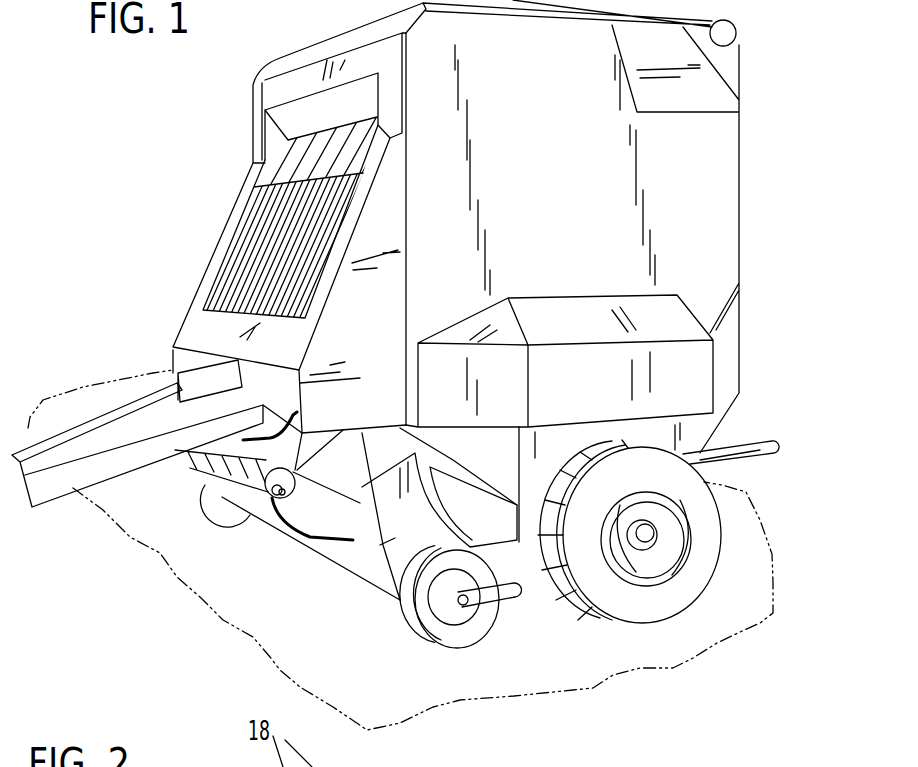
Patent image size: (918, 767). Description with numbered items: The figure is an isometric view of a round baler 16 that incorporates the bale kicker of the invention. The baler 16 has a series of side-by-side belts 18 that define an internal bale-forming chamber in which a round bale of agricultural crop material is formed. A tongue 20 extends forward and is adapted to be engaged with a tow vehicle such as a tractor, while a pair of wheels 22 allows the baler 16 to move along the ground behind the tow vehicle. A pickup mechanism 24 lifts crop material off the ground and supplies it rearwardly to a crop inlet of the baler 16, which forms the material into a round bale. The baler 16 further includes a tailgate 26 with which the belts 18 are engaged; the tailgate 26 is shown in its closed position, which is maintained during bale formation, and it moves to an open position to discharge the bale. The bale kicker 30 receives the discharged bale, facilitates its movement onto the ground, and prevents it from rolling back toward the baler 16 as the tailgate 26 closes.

The round baler 16 is at (207, 117).
The belts 18 is at (323, 157).
The tongue 20 is at (90, 470).
The wheels 22 is at (697, 592).
The pickup mechanism 24 is at (287, 560).
The tailgate 26 is at (777, 325).
The bale kicker 30 is at (770, 490).